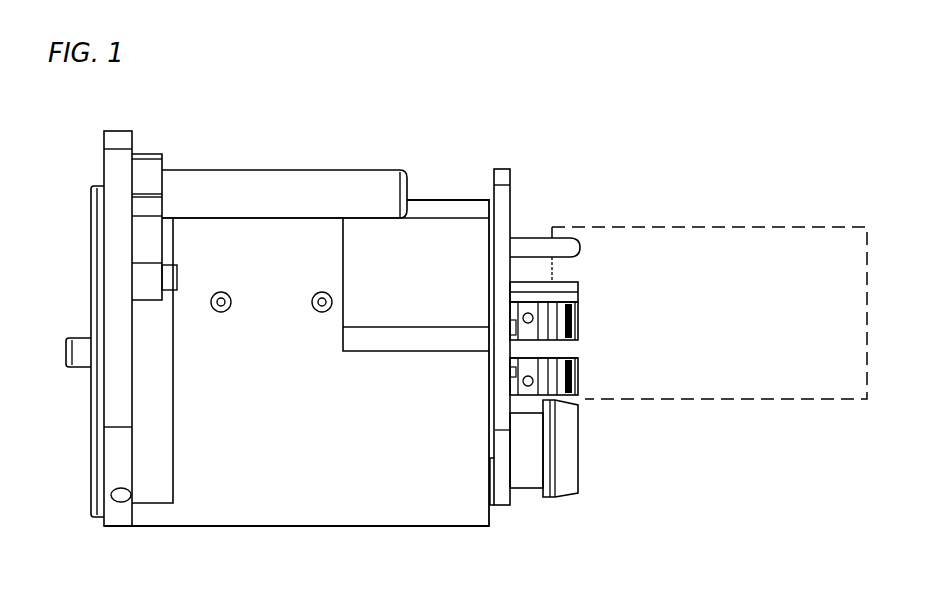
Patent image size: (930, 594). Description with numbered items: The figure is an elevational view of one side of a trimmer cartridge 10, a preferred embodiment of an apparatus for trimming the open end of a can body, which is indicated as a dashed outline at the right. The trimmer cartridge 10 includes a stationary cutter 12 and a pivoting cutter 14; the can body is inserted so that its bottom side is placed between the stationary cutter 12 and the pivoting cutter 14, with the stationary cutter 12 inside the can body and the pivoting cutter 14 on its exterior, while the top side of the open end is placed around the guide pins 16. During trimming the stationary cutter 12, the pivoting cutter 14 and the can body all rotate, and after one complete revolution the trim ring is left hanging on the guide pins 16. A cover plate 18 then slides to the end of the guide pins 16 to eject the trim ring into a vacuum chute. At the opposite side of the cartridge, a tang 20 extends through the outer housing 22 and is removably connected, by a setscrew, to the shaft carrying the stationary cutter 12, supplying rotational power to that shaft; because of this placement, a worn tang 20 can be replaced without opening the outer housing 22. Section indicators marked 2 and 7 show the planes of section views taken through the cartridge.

The trimmer cartridge 10 is at (68, 170).
The stationary cutter 12 is at (588, 314).
The pivoting cutter 14 is at (590, 474).
The guide pins 16 is at (578, 284).
The cover plate 18 is at (505, 506).
The tang 20 is at (65, 352).
The outer housing 22 is at (390, 527).
The section line for FIG. 2 is at (522, 398).
The section line for FIG. 7 is at (201, 149).